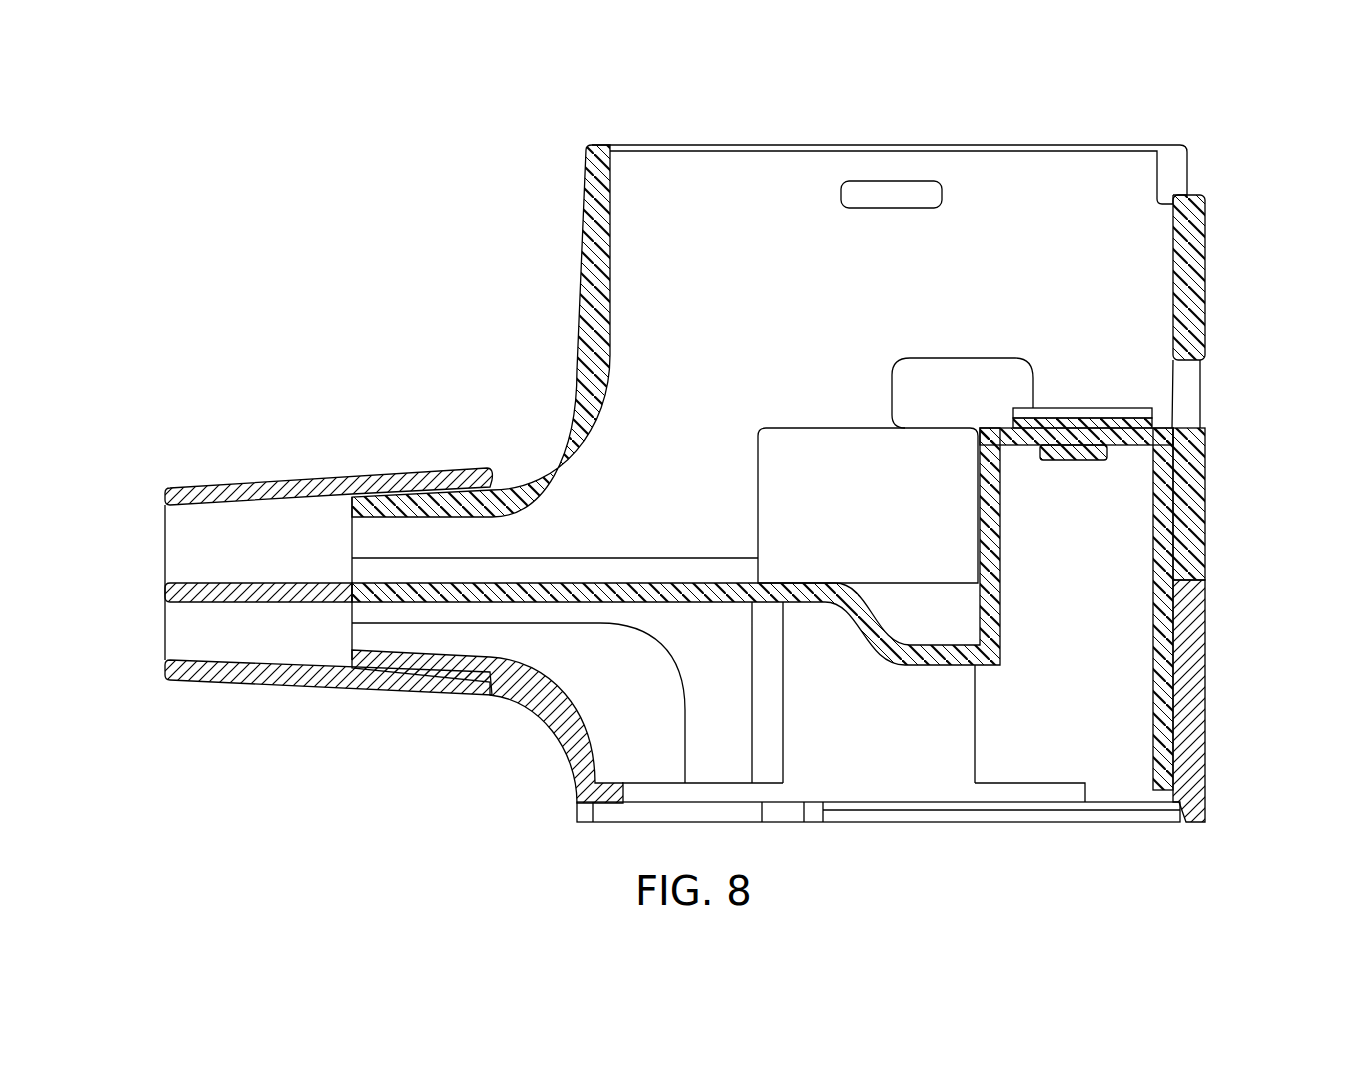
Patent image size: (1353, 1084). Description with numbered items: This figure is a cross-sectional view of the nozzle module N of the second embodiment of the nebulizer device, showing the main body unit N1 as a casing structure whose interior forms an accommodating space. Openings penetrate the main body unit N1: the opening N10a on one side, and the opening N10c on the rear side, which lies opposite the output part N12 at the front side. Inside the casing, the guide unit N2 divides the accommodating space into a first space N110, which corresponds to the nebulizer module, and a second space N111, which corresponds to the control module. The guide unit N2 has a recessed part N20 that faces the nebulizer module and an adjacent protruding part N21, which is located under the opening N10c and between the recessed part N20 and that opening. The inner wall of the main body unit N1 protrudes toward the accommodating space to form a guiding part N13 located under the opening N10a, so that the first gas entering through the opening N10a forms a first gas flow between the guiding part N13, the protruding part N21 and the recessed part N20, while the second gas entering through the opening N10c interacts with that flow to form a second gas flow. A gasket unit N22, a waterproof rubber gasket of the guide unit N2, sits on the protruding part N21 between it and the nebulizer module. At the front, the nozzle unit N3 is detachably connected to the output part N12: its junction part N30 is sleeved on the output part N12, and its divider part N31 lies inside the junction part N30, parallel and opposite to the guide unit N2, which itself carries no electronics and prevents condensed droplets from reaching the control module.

The nozzle module N is at (516, 166).
The main body unit N1 is at (1212, 268).
The opening N10a is at (971, 343).
The opening N10c is at (1220, 402).
The first space N110 is at (1091, 177).
The second space N111 is at (1041, 757).
The output part N12 is at (525, 697).
The guiding part N13 is at (825, 458).
The guide unit N2 is at (811, 610).
The recessed part N20 is at (933, 618).
The protruding part N21 is at (1158, 520).
The gasket unit N22 is at (1085, 460).
The nozzle unit N3 is at (203, 476).
The junction part N30 is at (290, 486).
The divider part N31 is at (200, 580).